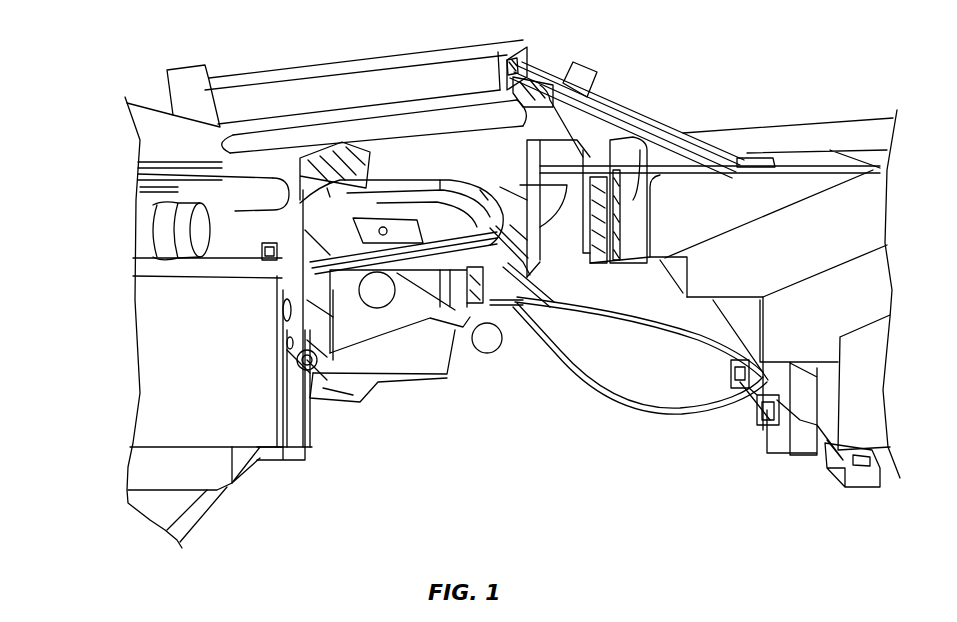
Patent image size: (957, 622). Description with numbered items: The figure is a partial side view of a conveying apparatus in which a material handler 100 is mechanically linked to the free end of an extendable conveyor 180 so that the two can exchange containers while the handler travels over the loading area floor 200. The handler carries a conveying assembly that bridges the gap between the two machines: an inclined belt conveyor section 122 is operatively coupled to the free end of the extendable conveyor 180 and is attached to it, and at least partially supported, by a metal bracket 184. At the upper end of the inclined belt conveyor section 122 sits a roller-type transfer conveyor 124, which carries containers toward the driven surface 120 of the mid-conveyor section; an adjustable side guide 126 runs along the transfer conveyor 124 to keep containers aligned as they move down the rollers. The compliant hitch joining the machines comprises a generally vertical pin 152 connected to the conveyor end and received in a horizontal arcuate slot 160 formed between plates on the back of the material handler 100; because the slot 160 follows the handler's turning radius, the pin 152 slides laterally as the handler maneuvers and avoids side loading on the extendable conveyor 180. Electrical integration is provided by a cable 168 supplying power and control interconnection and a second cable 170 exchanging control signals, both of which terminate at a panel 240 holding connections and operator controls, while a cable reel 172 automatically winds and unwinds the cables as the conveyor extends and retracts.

The material handler 100 is at (112, 419).
The driven surface 120 is at (190, 152).
The inclined belt conveyor section 122 is at (638, 95).
The transfer conveyor 124 is at (279, 108).
The side guide 126 is at (357, 87).
The vertical pin 152 is at (540, 233).
The slot 160 is at (545, 278).
The cable 168 is at (657, 322).
The second cable 170 is at (615, 402).
The cable reel 172 is at (465, 362).
The extendable conveyor 180 is at (807, 253).
The metal bracket 184 is at (688, 172).
The loading area floor 200 is at (568, 471).
The panel 240 is at (788, 458).